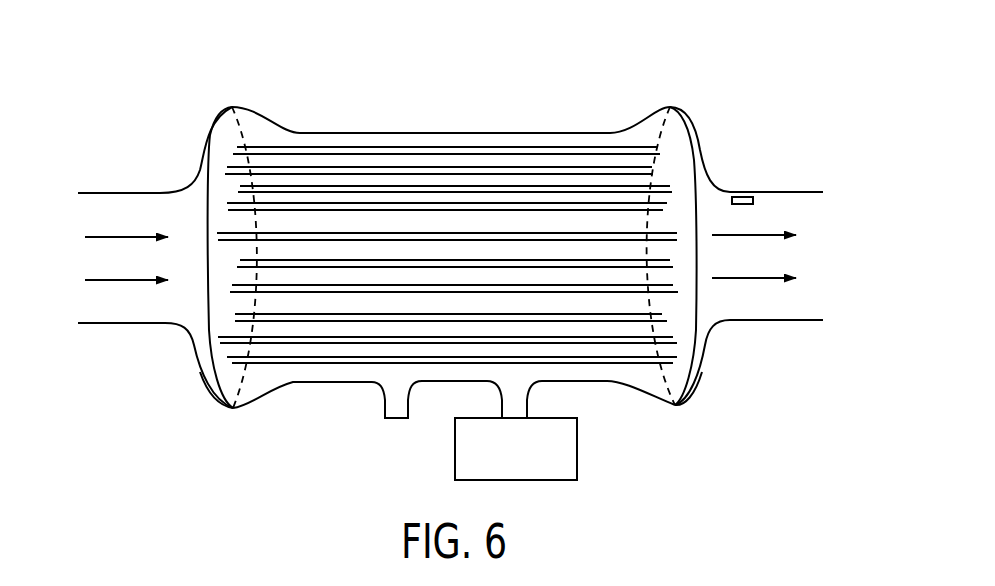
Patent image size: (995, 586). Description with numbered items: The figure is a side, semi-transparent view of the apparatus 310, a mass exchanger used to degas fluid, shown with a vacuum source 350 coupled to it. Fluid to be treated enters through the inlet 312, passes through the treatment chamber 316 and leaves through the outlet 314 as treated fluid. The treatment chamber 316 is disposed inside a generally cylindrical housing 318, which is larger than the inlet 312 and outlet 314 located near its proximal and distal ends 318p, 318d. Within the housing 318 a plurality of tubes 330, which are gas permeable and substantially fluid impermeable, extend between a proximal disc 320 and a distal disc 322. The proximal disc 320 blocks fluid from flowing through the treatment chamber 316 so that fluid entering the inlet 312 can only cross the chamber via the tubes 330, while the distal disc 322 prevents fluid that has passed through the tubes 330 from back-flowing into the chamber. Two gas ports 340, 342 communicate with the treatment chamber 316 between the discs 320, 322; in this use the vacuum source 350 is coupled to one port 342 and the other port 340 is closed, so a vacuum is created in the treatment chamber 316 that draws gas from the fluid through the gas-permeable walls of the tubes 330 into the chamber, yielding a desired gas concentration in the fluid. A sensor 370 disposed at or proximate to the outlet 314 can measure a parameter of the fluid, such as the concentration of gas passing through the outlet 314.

The apparatus 310 is at (133, 60).
The inlet 312 is at (122, 210).
The outlet 314 is at (768, 302).
The treatment chamber 316 is at (445, 142).
The housing 318 is at (348, 132).
The proximal end of housing 318p is at (231, 97).
The distal end of housing 318d is at (674, 90).
The proximal disc 320 is at (228, 382).
The distal disc 322 is at (675, 382).
The tubes 330 is at (552, 170).
The gas port 340 is at (392, 392).
The gas port 342 is at (517, 385).
The vacuum source 350 is at (577, 448).
The sensor 370 is at (743, 197).